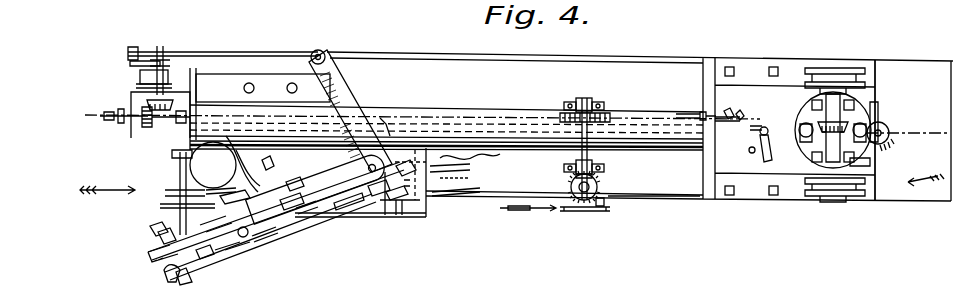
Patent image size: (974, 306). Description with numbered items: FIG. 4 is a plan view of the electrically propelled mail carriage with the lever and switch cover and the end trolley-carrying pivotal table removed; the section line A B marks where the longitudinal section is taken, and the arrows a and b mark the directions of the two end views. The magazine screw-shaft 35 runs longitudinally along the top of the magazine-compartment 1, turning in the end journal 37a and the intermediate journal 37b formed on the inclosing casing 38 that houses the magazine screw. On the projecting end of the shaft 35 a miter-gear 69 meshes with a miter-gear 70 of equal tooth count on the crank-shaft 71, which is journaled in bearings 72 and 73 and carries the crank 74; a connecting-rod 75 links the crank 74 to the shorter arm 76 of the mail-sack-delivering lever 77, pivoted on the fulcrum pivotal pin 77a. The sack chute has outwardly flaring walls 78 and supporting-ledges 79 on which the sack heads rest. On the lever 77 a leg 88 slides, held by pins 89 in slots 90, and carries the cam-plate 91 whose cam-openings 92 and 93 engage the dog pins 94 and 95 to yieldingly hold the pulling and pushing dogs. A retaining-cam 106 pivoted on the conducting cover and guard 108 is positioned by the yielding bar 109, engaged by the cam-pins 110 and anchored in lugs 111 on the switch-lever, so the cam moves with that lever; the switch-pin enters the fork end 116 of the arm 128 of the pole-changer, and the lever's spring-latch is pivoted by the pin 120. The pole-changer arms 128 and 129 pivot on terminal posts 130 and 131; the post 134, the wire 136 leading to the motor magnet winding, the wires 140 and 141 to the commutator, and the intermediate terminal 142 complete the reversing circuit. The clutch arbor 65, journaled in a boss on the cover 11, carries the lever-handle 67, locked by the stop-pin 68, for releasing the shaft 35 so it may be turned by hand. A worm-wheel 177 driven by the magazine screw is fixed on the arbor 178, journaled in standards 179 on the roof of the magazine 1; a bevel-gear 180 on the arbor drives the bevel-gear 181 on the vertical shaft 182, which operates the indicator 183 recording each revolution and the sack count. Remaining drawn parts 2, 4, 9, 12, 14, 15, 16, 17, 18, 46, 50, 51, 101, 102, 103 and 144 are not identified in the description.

The magazine-compartment 1 is at (654, 184).
The frame end plate 2 is at (910, 196).
The roller 4 is at (890, 128).
The bearing bracket 9 is at (878, 108).
The cover 11 is at (767, 114).
The bearing 12 is at (872, 148).
The gear housing 14 is at (860, 171).
The bevel gear 15 is at (820, 120).
The vertical shaft 16 is at (826, 150).
The bearing block 17 is at (810, 186).
The pulley 18 is at (840, 198).
The magazine screw-shaft 35 is at (104, 118).
The end journal 37a is at (142, 122).
The intermediate journal 37b is at (182, 126).
The inclosing casing 38 is at (446, 119).
The pivot pin 46 is at (764, 126).
The pin 50 is at (760, 130).
The lever 51 is at (768, 164).
The arbor 65 is at (744, 108).
The lever-handle 67 is at (700, 113).
The stop-pin or lever-retaining pin 68 is at (727, 108).
The miter-gear 69 is at (160, 120).
The miter-gear 70 is at (147, 103).
The crank-shaft 71 is at (140, 76).
The bearing 72 is at (136, 86).
The bearing 73 is at (135, 63).
The crank 74 is at (158, 50).
The connecting-rod 75 is at (236, 50).
The shorter arm 76 is at (334, 64).
The mail-sack-delivering lever 77 is at (346, 210).
The fulcrum pivotal pin 77a is at (315, 189).
The outwardly-flaring sides or walls 78 is at (170, 210).
The supporting-ledges 79 is at (176, 204).
The leg 88 is at (296, 188).
The pins 89 is at (286, 212).
The slots 90 is at (300, 216).
The cam-plate 91 is at (158, 266).
The cam-opening 92 is at (186, 282).
The cam-opening 93 is at (158, 236).
The pin 94 is at (168, 278).
The pin 95 is at (150, 227).
The slide 101 is at (268, 240).
The block 102 is at (231, 203).
The guide bar 103 is at (212, 222).
The retaining-cam 106 is at (225, 132).
The conducting cover and guard 108 is at (174, 158).
The spring or yielding bar 109 is at (248, 168).
The cam-pins 110 is at (236, 160).
The lugs 111 is at (278, 155).
The fork end 116 is at (306, 198).
The pin 120 is at (310, 203).
The arm 128 is at (395, 176).
The arm 129 is at (352, 206).
The terminal post 130 is at (398, 216).
The terminal post 131 is at (390, 202).
The post 134 is at (409, 167).
The wire 136 is at (458, 177).
The wire 140 is at (448, 164).
The wire 141 is at (452, 194).
The intermediate terminal 142 is at (404, 120).
The link 144 is at (220, 192).
The worm-wheel 177 is at (600, 124).
The arbor 178 is at (580, 150).
The standards 179 is at (598, 164).
The bevel-gear 180 is at (602, 174).
The bevel-gear 181 is at (606, 204).
The vertical shaft 182 is at (570, 186).
The indicator 183 is at (594, 212).
The section line A B A is at (415, 109).
The section line A B is at (907, 126).
The arrow a is at (926, 173).
The arrow b is at (107, 182).